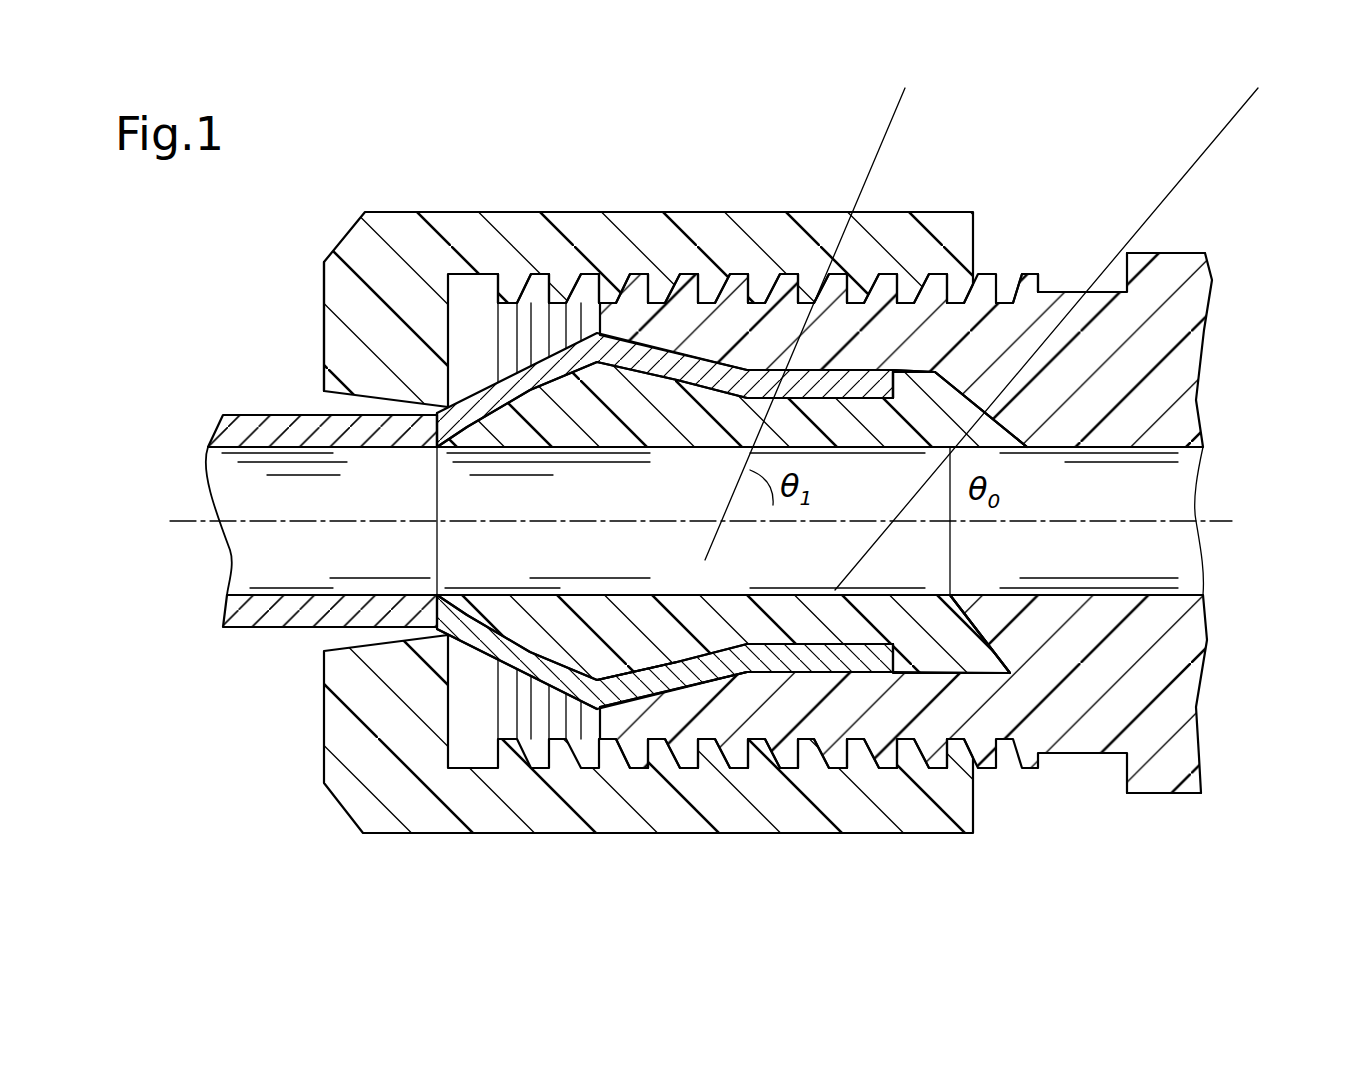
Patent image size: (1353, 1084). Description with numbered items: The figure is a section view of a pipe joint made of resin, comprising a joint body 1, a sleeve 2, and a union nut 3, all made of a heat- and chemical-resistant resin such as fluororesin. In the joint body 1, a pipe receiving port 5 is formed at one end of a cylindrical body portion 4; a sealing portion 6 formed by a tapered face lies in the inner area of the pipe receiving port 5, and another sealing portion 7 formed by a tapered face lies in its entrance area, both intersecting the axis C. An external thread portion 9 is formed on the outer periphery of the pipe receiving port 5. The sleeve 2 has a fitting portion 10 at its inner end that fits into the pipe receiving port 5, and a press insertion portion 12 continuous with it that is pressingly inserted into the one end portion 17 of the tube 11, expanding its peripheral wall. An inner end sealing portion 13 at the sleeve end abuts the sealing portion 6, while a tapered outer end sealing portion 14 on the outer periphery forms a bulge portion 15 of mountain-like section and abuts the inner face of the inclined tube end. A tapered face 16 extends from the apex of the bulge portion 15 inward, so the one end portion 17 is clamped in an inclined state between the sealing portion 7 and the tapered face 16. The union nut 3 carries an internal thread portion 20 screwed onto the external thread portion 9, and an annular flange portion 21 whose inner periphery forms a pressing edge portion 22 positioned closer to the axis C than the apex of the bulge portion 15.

The joint body 1 is at (1183, 251).
The sleeve 2 is at (660, 457).
The union nut 3 is at (340, 227).
The body portion 4 is at (1188, 365).
The pipe receiving port 5 is at (722, 715).
The sealing portion 6 is at (985, 622).
The sealing portion 7 is at (707, 375).
The external thread portion 9 is at (1030, 288).
The fitting portion 10 is at (950, 397).
The tube 11 is at (266, 412).
The press insertion portion 12 is at (845, 640).
The inner end sealing portion 13 is at (985, 414).
The outer end sealing portion 14 is at (535, 380).
The bulge portion 15 is at (575, 640).
The tapered face 16 is at (660, 678).
The one end portion 17 is at (838, 388).
The internal thread portion 20 is at (592, 288).
The flange portion 21 is at (333, 302).
The pressing edge portion 22 is at (413, 412).
The axis C is at (1220, 520).